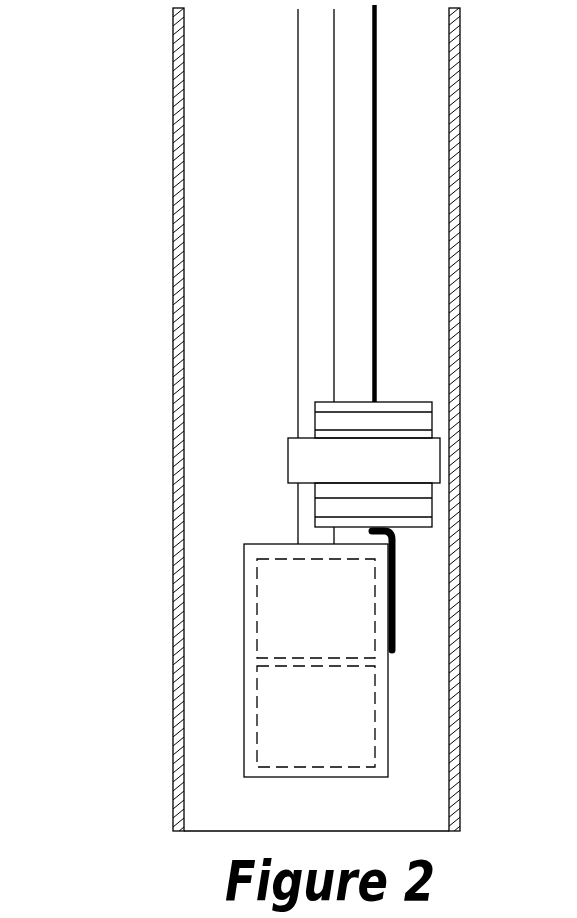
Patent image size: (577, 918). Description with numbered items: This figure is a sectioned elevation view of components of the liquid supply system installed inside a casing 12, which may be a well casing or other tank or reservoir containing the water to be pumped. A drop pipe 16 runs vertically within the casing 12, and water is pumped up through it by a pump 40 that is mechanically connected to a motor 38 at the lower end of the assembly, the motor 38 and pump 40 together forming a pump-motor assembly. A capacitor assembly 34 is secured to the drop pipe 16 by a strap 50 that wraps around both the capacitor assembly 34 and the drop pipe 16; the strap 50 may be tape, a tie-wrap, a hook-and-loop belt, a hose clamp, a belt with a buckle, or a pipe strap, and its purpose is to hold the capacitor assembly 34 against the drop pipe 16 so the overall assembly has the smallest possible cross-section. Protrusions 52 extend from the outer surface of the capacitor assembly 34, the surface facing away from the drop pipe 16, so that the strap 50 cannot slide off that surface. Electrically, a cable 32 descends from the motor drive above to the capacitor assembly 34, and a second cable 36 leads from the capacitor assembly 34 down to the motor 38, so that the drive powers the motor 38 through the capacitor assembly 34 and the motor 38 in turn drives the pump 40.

The casing 12 is at (173, 153).
The drop pipe 16 is at (298, 332).
The cable 32 is at (377, 330).
The capacitor assembly 34 is at (448, 416).
The strap 50 is at (433, 460).
The protrusions 52 is at (428, 512).
The cable 36 is at (397, 602).
The motor 38 is at (280, 735).
The pump 40 is at (280, 618).